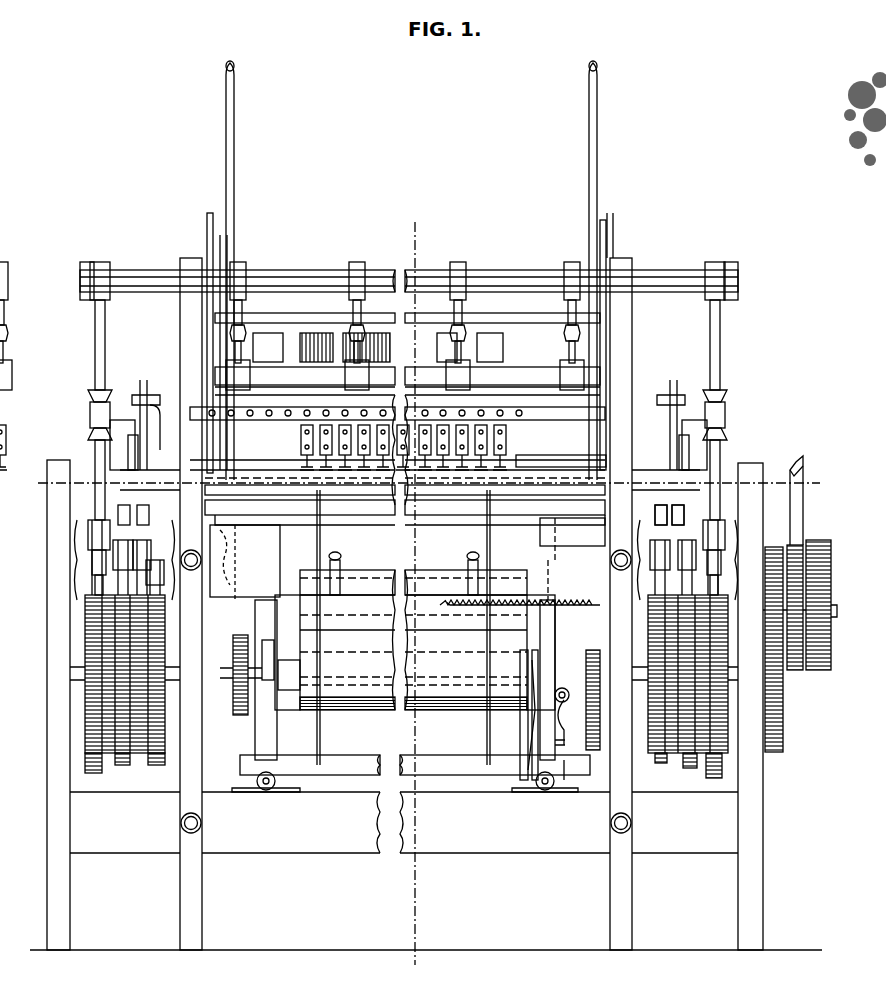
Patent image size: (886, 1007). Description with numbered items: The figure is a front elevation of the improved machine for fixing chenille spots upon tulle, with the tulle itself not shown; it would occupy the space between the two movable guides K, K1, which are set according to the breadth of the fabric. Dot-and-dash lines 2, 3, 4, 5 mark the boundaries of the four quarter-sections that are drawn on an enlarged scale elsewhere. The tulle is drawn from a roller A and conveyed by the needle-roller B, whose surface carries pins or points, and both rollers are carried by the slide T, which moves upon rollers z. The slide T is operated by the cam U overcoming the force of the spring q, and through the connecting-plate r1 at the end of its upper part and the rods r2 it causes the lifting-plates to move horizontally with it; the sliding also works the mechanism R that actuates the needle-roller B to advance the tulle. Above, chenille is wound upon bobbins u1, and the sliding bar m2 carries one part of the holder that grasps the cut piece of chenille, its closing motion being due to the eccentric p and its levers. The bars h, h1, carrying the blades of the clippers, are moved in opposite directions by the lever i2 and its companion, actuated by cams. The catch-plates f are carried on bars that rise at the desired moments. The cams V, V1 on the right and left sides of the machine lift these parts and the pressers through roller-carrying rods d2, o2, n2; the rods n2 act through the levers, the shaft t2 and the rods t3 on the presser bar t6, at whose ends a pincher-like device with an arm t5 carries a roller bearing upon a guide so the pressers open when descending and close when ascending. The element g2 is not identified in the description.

The arm of pincher device t5 is at (418, 270).
The shaft t2 is at (492, 278).
The rod t3 is at (564, 306).
The bobbin u1 is at (407, 364).
The presser bar t6 is at (518, 420).
The catch-plate f is at (302, 447).
The clipper bar h is at (546, 458).
The holder bar m2 is at (405, 489).
The clipper bar h1 is at (405, 517).
The connecting-plate r1 is at (535, 506).
The rod r2 is at (291, 492).
The lever i2 is at (231, 541).
The guide K is at (341, 631).
The guide K1 is at (480, 631).
The needle-roller B is at (413, 689).
The spring q is at (520, 613).
The slide T is at (415, 687).
The roller z is at (405, 780).
The roller A is at (281, 665).
The eccentric p is at (241, 675).
The mechanism R is at (523, 715).
The cam U is at (577, 715).
The rod n2 is at (405, 428).
The cam V1 is at (125, 646).
The cam V is at (685, 649).
The clevis g2 is at (654, 514).
The rod d2 is at (682, 514).
The rod o2 is at (167, 522).
The section line 2 is at (427, 483).
The section line 3 is at (823, 483).
The section line 4 is at (415, 584).
The section line 5 is at (425, 977).